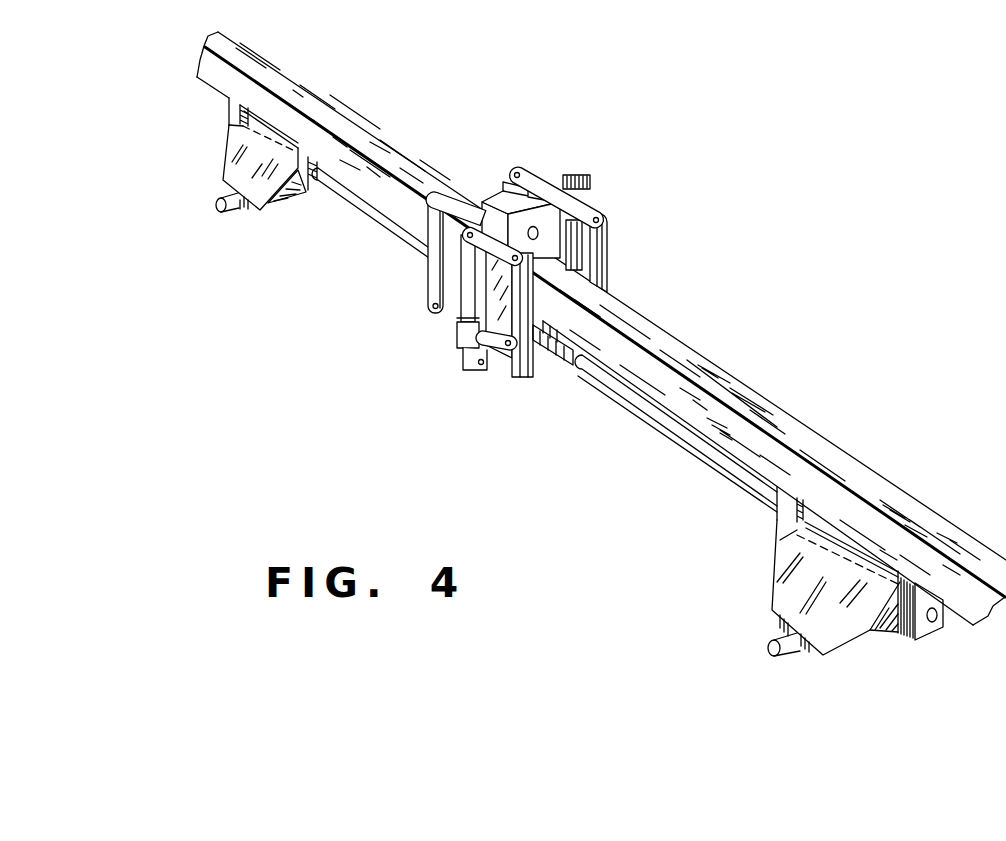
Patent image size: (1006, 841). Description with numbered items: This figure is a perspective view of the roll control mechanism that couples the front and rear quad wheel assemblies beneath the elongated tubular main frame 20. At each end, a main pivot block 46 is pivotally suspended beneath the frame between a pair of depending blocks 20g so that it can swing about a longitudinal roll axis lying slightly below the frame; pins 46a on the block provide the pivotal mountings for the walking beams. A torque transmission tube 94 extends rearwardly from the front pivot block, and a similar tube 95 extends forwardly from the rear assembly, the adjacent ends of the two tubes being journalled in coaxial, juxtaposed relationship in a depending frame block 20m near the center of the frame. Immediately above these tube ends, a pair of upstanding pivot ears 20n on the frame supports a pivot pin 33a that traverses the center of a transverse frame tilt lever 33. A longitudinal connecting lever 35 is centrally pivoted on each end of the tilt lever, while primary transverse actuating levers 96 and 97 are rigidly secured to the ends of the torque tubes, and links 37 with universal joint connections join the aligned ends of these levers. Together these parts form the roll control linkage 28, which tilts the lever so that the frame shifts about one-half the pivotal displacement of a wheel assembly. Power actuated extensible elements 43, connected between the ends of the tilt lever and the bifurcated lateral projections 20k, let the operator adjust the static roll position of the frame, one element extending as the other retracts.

The tubular main frame 20 is at (800, 435).
The depending blocks 20g is at (228, 117).
The lateral projections 20k is at (489, 372).
The depending frame block 20m is at (499, 352).
The upstanding pivot ears 20n is at (505, 208).
The roll control linkage mechanism 28 is at (541, 296).
The transverse frame tilt lever 33 is at (540, 198).
The pivot pin 33a is at (580, 207).
The longitudinal connecting lever 35 is at (438, 195).
The links 37 is at (428, 285).
The power actuated extensible elements 43 is at (462, 322).
The main pivot block 46 is at (270, 196).
The pins 46a is at (213, 215).
The torque transmission tube 94 is at (368, 215).
The tube 95 is at (660, 432).
The primary transverse actuating lever 96 is at (457, 320).
The primary transverse actuating lever 97 is at (557, 365).